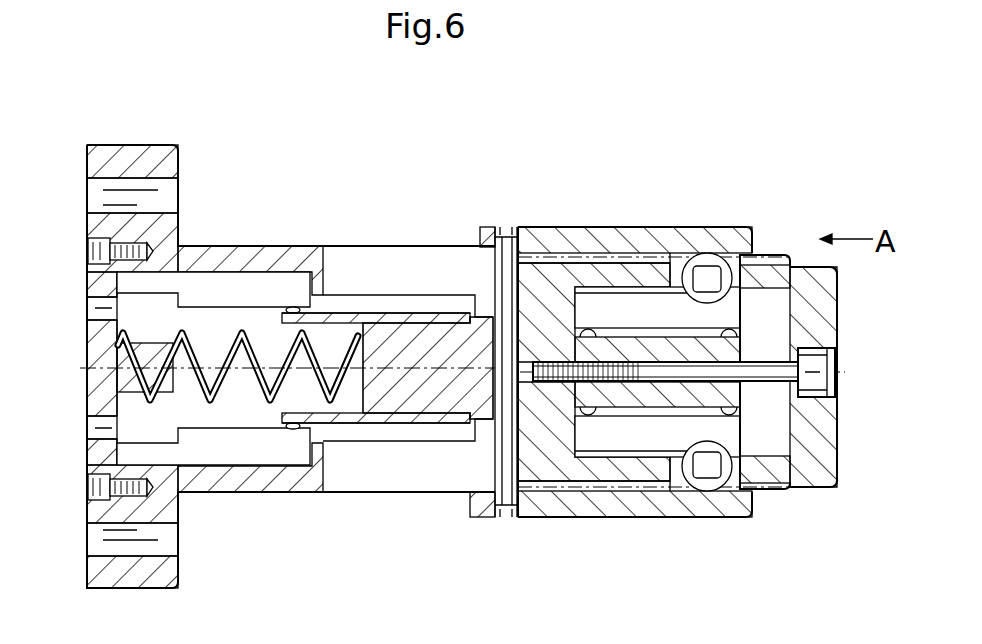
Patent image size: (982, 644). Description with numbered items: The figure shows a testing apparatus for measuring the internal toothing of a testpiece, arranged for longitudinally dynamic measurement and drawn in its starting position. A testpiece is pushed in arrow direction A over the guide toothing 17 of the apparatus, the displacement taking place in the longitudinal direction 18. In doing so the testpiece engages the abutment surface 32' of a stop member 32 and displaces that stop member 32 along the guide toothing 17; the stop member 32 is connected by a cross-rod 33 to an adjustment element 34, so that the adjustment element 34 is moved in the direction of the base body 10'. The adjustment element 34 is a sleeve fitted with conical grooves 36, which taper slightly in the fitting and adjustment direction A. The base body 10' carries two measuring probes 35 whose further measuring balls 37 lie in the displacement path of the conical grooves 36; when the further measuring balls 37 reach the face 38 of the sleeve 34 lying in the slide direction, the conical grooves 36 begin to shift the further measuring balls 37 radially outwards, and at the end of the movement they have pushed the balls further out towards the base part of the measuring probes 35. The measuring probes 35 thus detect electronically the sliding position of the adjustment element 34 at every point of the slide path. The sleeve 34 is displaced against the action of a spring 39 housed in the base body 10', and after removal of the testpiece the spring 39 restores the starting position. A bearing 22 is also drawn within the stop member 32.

The base body 10' is at (291, 339).
The guide toothing 17 is at (543, 273).
The longitudinal direction 18 is at (85, 367).
The bearing 22 is at (638, 312).
The stop member 32 is at (654, 340).
The abutment surface 32' is at (788, 327).
The cross-rod 33 is at (507, 518).
The adjustment element 34 is at (438, 327).
The measuring probes 35 is at (238, 287).
The conical grooves 36 is at (388, 313).
The further measuring balls 37 is at (297, 306).
The face 38 is at (283, 323).
The spring 39 is at (328, 404).